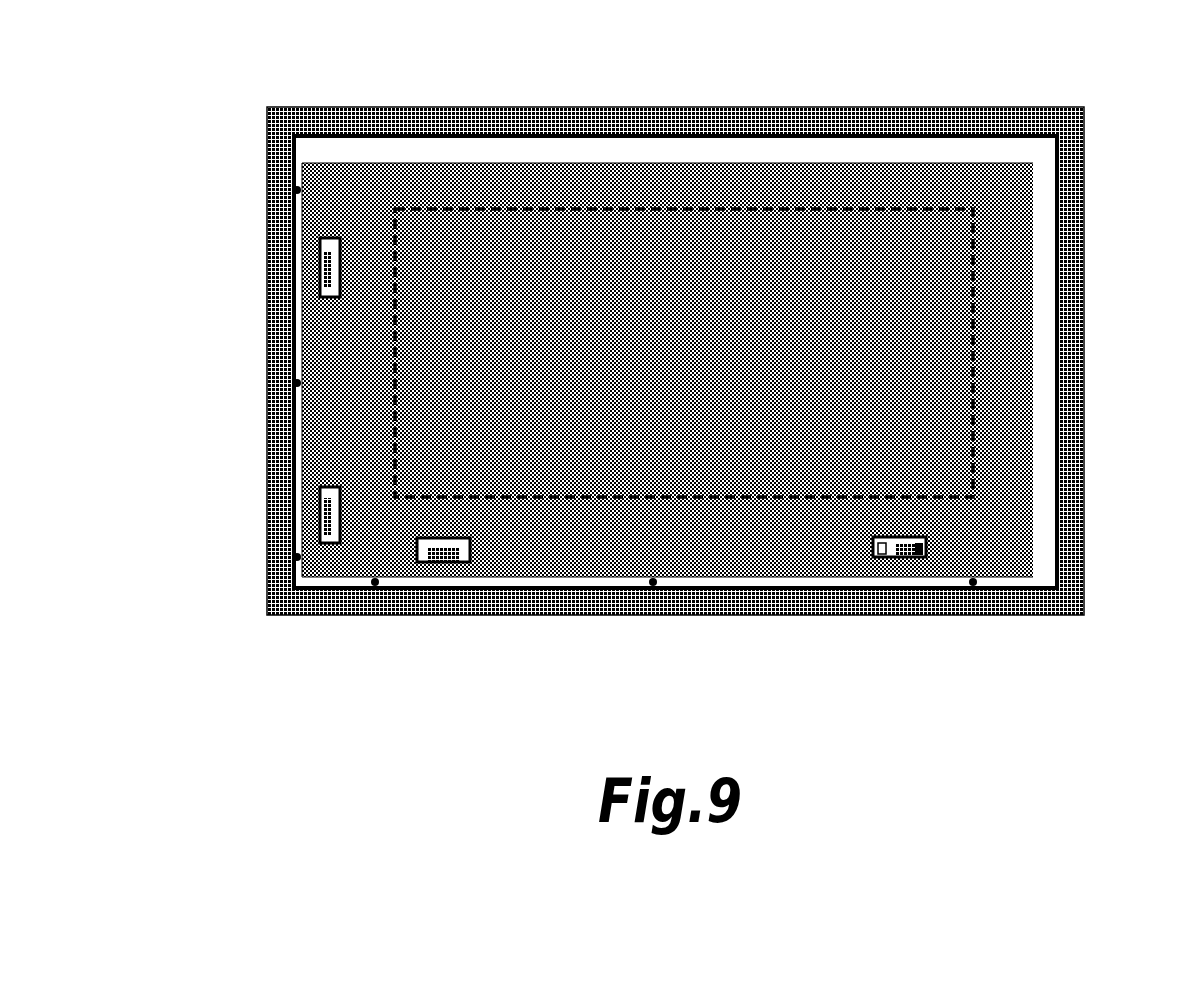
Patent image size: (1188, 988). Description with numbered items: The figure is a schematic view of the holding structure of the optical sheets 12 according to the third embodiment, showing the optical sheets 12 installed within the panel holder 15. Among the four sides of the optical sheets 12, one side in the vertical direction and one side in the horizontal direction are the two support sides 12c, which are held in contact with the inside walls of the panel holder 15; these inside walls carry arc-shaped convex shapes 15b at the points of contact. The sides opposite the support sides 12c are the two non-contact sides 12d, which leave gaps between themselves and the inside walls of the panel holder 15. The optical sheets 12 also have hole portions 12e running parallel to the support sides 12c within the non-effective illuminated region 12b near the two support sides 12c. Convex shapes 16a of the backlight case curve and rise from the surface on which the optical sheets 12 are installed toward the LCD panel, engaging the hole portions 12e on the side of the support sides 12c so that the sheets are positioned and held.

The panel holder 15 is at (421, 118).
The arc-shaped convex shapes 15b is at (297, 190).
The optical sheets 12 is at (608, 188).
The non-effective illuminated region 12b is at (747, 175).
The support sides 12c is at (300, 292).
The non-contact sides 12d is at (663, 165).
The hole portions 12e is at (926, 557).
The convex shapes 16a is at (893, 557).